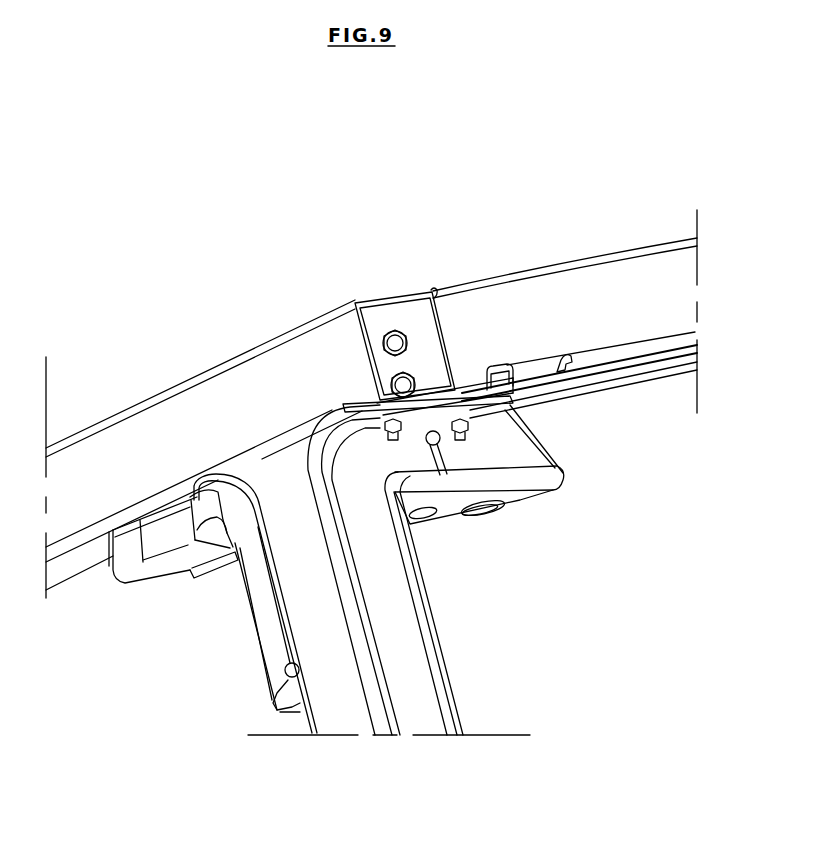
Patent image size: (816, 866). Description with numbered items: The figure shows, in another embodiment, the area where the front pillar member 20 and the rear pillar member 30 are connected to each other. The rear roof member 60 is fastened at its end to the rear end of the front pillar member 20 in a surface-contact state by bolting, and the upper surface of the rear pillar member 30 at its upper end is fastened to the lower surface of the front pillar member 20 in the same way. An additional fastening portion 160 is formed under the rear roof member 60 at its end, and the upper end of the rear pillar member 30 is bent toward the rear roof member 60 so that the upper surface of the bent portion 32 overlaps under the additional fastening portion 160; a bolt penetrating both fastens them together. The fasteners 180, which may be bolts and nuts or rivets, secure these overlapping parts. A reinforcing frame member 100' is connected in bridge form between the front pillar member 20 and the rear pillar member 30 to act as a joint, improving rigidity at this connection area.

The front pillar member 20 is at (198, 417).
The rear roof member 60 is at (608, 300).
The additional fastening portion 160 is at (488, 388).
The fastener 180 is at (390, 385).
The rear pillar member 30 is at (337, 692).
The bent portion 32 is at (513, 500).
The reinforcing frame member 100' is at (173, 599).